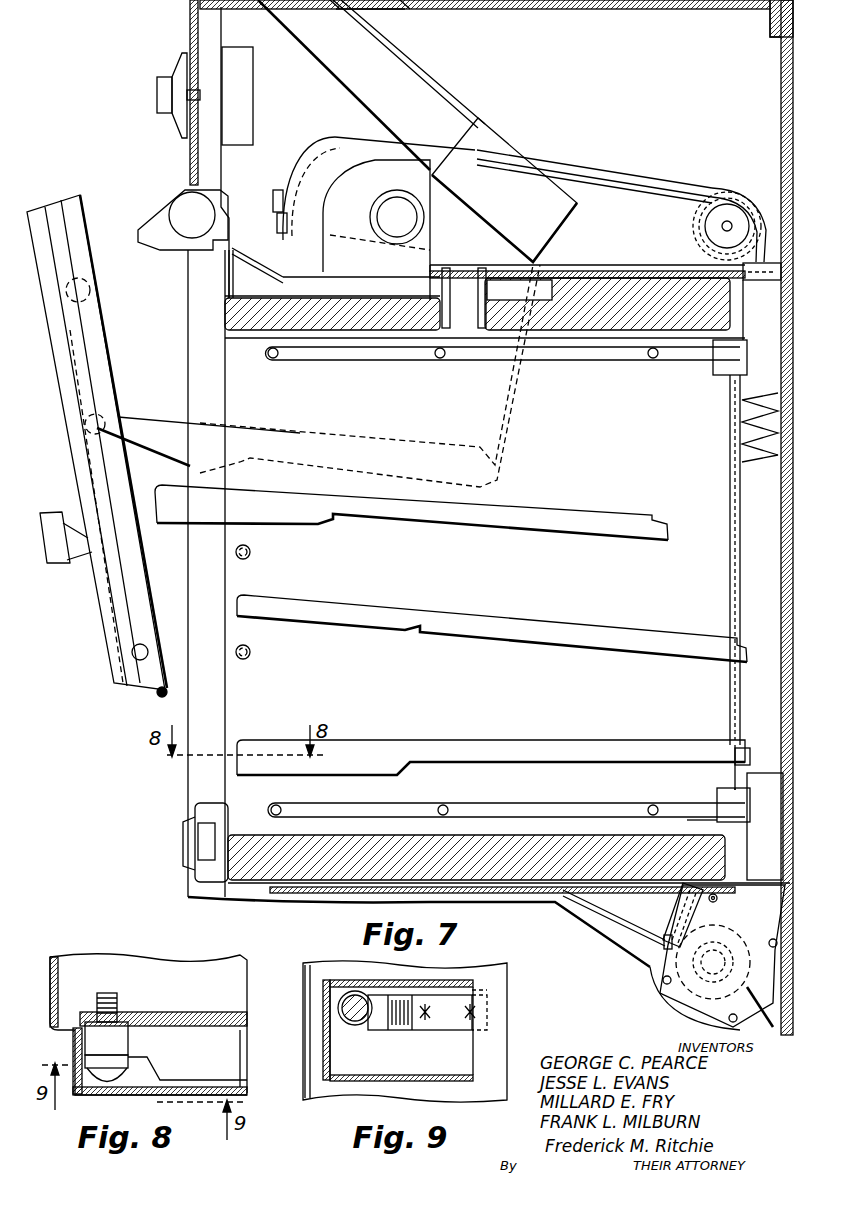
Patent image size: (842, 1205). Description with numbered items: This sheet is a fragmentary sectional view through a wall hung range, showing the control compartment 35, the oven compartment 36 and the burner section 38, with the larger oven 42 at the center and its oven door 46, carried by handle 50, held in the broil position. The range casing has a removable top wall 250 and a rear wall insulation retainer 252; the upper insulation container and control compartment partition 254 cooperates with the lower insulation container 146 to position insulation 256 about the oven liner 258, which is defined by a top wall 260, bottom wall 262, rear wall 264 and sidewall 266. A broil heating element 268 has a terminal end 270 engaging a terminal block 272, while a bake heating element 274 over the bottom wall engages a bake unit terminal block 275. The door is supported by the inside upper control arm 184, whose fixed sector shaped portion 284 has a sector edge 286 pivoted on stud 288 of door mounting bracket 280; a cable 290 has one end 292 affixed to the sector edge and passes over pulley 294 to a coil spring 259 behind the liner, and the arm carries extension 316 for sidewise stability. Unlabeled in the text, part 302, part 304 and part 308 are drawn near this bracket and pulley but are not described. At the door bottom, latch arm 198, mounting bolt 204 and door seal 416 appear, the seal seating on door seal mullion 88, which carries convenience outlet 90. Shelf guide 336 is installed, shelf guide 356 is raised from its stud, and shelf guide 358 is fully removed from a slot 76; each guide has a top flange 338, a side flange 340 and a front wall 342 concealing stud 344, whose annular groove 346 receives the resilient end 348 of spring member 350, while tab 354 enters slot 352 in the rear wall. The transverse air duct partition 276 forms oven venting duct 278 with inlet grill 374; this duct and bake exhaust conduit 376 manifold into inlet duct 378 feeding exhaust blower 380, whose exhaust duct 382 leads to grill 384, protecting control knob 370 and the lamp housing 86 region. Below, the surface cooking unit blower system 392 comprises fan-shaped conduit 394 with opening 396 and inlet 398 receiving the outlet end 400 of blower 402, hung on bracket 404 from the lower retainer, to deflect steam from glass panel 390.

In FIG. 7, the control section or compartment 35 is at (645, 62).
In FIG. 7, the oven section or compartment 36 is at (748, 508).
In FIG. 7, the surface cooking unit compartment or burner section 38 is at (580, 915).
In FIG. 7, the larger oven 42 is at (262, 585).
In FIG. 7, the oven door 46 is at (55, 402).
In FIG. 7, the handle 50 is at (55, 560).
In FIG. 7, the slots 76 is at (733, 560).
In FIG. 7, the lamp housing 86 is at (168, 205).
In FIG. 7, the door seal mullion 88 is at (196, 881).
In FIG. 7, the electrical convenience outlet 90 is at (183, 836).
In FIG. 7, the lower insulation container 146 is at (241, 895).
In FIG. 7, the inside upper control arm or link 184 is at (150, 430).
In FIG. 7, the latch arm 198 is at (95, 290).
In FIG. 7, the control arm mounting bolt 204 is at (132, 655).
In FIG. 7, the top wall 250 is at (535, 9).
In FIG. 7, the rear wall insulation retainer 252 is at (781, 125).
In FIG. 7, the upper insulation container and control compartment partition 254 is at (600, 268).
In FIG. 7, the insulation 256 is at (592, 305).
In FIG. 7, the oven liner 258 is at (225, 322).
In FIG. 7, the coil spring 259 is at (742, 426).
In FIG. 7, the top wall 260 is at (245, 336).
In FIG. 7, the bottom wall 262 is at (450, 834).
In FIG. 7, the rear wall 264 is at (730, 440).
In FIG. 7, the sidewall 266 is at (262, 572).
In FIG. 8, the sidewall 266 is at (195, 1023).
In FIG. 7, the broil heating element 268 is at (457, 357).
In FIG. 7, the terminal end 270 is at (722, 375).
In FIG. 7, the terminal block 272 is at (748, 322).
In FIG. 7, the bake heating element 274 is at (527, 805).
In FIG. 7, the bake unit terminal block 275 is at (751, 855).
In FIG. 7, the transverse air duct partition 276 is at (225, 312).
In FIG. 7, the oven venting duct 278 is at (353, 285).
In FIG. 7, the door mounting bracket 280 is at (598, 185).
In FIG. 7, the sector shaped portion 284 is at (303, 230).
In FIG. 7, the sector edge 286 is at (300, 150).
In FIG. 7, the shaft or stud 288 is at (385, 212).
In FIG. 7, the flexible bond or cable 290 is at (556, 163).
In FIG. 7, the cable end 292 is at (280, 232).
In FIG. 7, the pulley 294 is at (735, 197).
In FIG. 7, the drum 302 is at (352, 145).
In FIG. 7, the stop 304 is at (273, 200).
In FIG. 7, the pulley flange 308 is at (693, 238).
In FIG. 7, the extension 316 is at (172, 452).
In FIG. 7, the left-side shelf guide 336 is at (430, 740).
In FIG. 9, the top wall or flange 338 is at (440, 982).
In FIG. 7, the sidewall or flange 340 is at (620, 755).
In FIG. 8, the sidewall or flange 340 is at (247, 1090).
In FIG. 9, the sidewall or flange 340 is at (495, 1050).
In FIG. 8, the front wall 342 is at (75, 1052).
In FIG. 9, the front wall 342 is at (310, 1085).
In FIG. 7, the stud 344 is at (251, 552).
In FIG. 8, the stud 344 is at (115, 1037).
In FIG. 9, the stud 344 is at (350, 1003).
In FIG. 8, the annular groove 346 is at (110, 1060).
In FIG. 8, the resilient end 348 is at (150, 1072).
In FIG. 8, the spring member 350 is at (247, 1062).
In FIG. 9, the spring member 350 is at (433, 1032).
In FIG. 7, the slot 352 is at (745, 745).
In FIG. 7, the tab or extension 354 is at (748, 752).
In FIG. 7, the shelf guide 356 is at (470, 612).
In FIG. 7, the shelf guide 358 is at (515, 506).
In FIG. 7, the control knob 370 is at (157, 82).
In FIG. 7, the transverse inlet grill 374 is at (228, 270).
In FIG. 7, the bake exhaust conduit 376 is at (483, 355).
In FIG. 7, the inlet duct 378 is at (430, 212).
In FIG. 7, the exhaust fan or blower 380 is at (497, 133).
In FIG. 7, the exhaust duct 382 is at (405, 62).
In FIG. 7, the exhaust grill or outlet 384 is at (345, 10).
In FIG. 7, the glass panel 390 is at (190, 33).
In FIG. 7, the surface cooking unit blower system 392 is at (610, 1015).
In FIG. 7, the fan-shaped conduit 394 is at (340, 893).
In FIG. 7, the opening 396 is at (272, 898).
In FIG. 7, the inlet 398 is at (632, 932).
In FIG. 7, the outlet end 400 is at (668, 920).
In FIG. 7, the blower 402 is at (675, 1005).
In FIG. 7, the bracket 404 is at (752, 990).
In FIG. 7, the door seal 416 is at (157, 694).